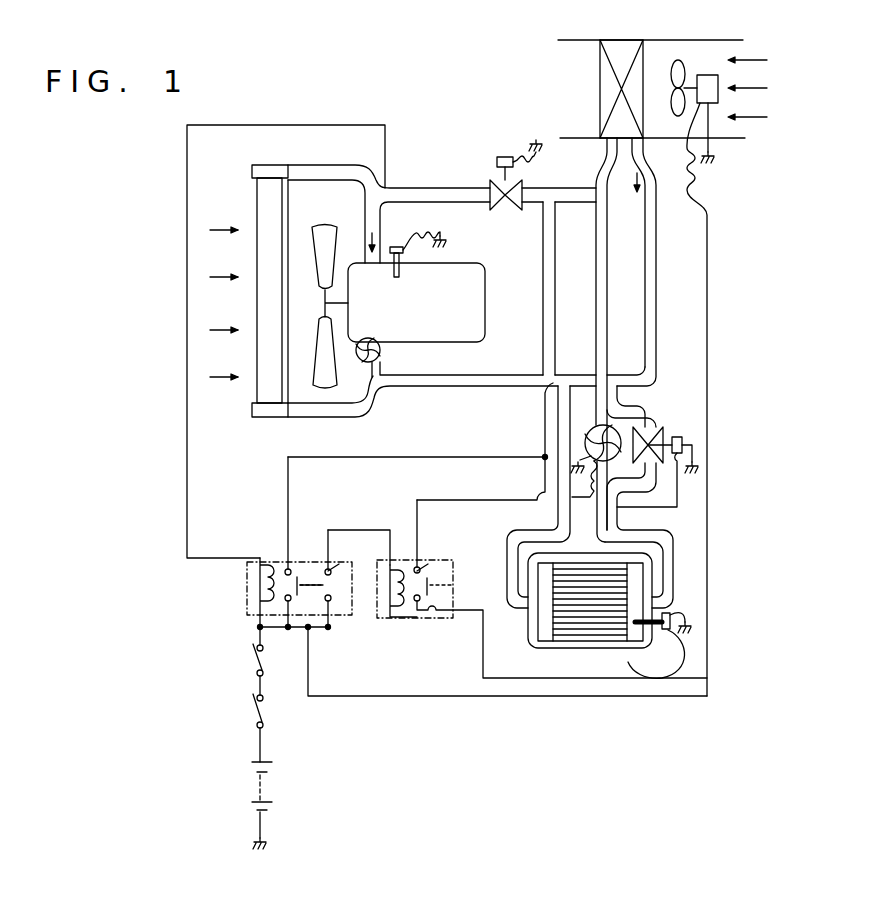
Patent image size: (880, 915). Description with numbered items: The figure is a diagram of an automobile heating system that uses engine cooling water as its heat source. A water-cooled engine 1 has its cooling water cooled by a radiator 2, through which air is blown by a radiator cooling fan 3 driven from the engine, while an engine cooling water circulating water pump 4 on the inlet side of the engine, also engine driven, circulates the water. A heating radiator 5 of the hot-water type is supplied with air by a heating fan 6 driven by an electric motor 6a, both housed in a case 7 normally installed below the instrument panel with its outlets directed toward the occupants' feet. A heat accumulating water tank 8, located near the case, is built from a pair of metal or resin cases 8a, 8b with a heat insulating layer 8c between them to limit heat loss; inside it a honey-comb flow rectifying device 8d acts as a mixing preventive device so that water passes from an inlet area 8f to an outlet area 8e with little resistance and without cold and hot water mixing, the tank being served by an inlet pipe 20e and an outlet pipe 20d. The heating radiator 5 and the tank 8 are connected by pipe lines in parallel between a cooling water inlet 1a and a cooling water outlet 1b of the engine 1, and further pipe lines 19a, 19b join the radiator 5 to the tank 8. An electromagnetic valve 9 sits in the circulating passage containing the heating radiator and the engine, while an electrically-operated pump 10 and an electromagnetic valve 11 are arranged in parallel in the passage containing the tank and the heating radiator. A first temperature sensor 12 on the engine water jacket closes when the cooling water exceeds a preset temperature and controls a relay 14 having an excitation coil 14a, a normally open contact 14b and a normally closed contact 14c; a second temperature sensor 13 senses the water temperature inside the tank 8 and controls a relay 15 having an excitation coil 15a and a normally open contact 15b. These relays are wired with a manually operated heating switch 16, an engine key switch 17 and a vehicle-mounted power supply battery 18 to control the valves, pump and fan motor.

The water-cooled engine 1 is at (482, 266).
The cooling water inlet 1a is at (384, 359).
The cooling water outlet 1b is at (367, 263).
The radiator 2 is at (262, 165).
The radiator cooling fan 3 is at (320, 227).
The engine cooling water circulating water pump 4 is at (380, 351).
The heating radiator 5 is at (615, 40).
The heating fan 6 is at (673, 66).
The electric motor 6a is at (702, 75).
The case 7 is at (667, 40).
The heat accumulating water tank 8 is at (570, 657).
The inner case 8a is at (538, 577).
The outer case 8b is at (585, 555).
The heat insulating layer 8c is at (600, 655).
The honey-comb flow rectifying device 8d is at (618, 641).
The outlet area 8e is at (633, 636).
The inlet area 8f is at (545, 643).
The electromagnetic valve 9 is at (497, 157).
The electrically-operated pump 10 is at (597, 429).
The electromagnetic valve 11 is at (678, 437).
The first temperature sensor 12 is at (395, 246).
The second temperature sensor 13 is at (680, 612).
The relay 14 is at (247, 608).
The excitation coil 14a is at (268, 565).
The normally open contact 14b is at (292, 562).
The normally closed contact 14c is at (334, 566).
The relay 15 is at (430, 557).
The excitation coil 15a is at (395, 618).
The normally open contact 15b is at (428, 616).
The manually operated heating switch 16 is at (253, 664).
The engine key switch 17 is at (253, 713).
The vehicle-mounted power supply battery 18 is at (252, 768).
The pipe line 19a is at (596, 308).
The pipe line 19b is at (677, 297).
The outlet pipe 20d is at (665, 588).
The inlet pipe 20e is at (546, 642).